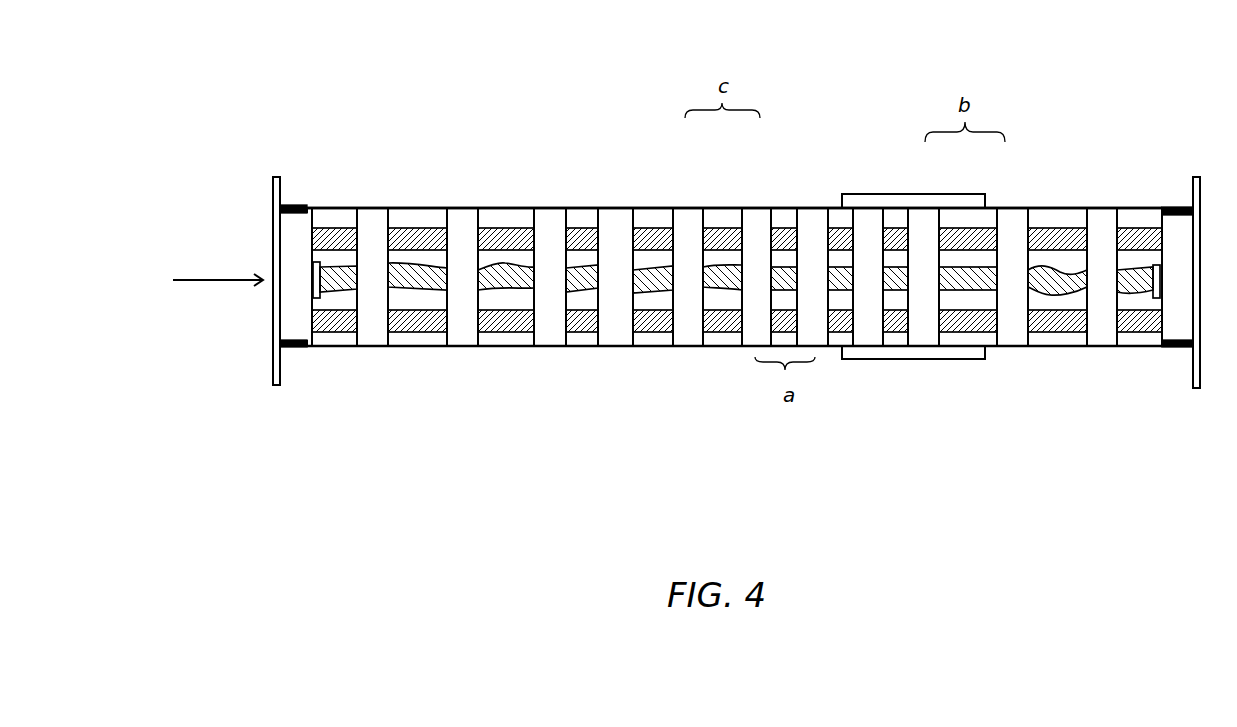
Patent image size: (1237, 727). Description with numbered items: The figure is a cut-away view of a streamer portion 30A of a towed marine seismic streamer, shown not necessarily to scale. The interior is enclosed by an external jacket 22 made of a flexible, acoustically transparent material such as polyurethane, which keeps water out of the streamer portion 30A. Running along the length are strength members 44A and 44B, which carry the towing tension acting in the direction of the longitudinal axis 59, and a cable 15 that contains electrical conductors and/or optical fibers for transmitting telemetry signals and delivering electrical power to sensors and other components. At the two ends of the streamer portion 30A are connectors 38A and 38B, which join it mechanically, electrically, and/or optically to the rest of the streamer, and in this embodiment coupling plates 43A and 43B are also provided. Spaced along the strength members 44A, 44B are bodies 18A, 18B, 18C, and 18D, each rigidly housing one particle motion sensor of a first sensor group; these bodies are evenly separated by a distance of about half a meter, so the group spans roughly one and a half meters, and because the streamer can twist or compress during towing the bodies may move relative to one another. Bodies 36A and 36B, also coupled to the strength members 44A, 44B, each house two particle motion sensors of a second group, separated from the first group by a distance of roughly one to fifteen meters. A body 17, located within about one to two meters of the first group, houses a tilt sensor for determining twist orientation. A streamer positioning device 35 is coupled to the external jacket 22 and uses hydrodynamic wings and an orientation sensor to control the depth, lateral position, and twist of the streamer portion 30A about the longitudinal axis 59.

The streamer portion 30A is at (563, 103).
The external jacket 22 is at (584, 206).
The cable 15 is at (430, 285).
The body 17 is at (685, 212).
The body 18A is at (763, 212).
The body 18B is at (812, 215).
The body 18C is at (860, 333).
The body 18D is at (920, 334).
The streamer positioning device 35 is at (963, 195).
The body 36A is at (1015, 213).
The body 36B is at (1100, 218).
The connector 38A is at (317, 270).
The connector 38B is at (1157, 267).
The coupling plate 43A is at (296, 333).
The coupling plate 43B is at (1176, 333).
The strength member 44A is at (527, 226).
The strength member 44B is at (582, 333).
The longitudinal axis 59 is at (222, 280).